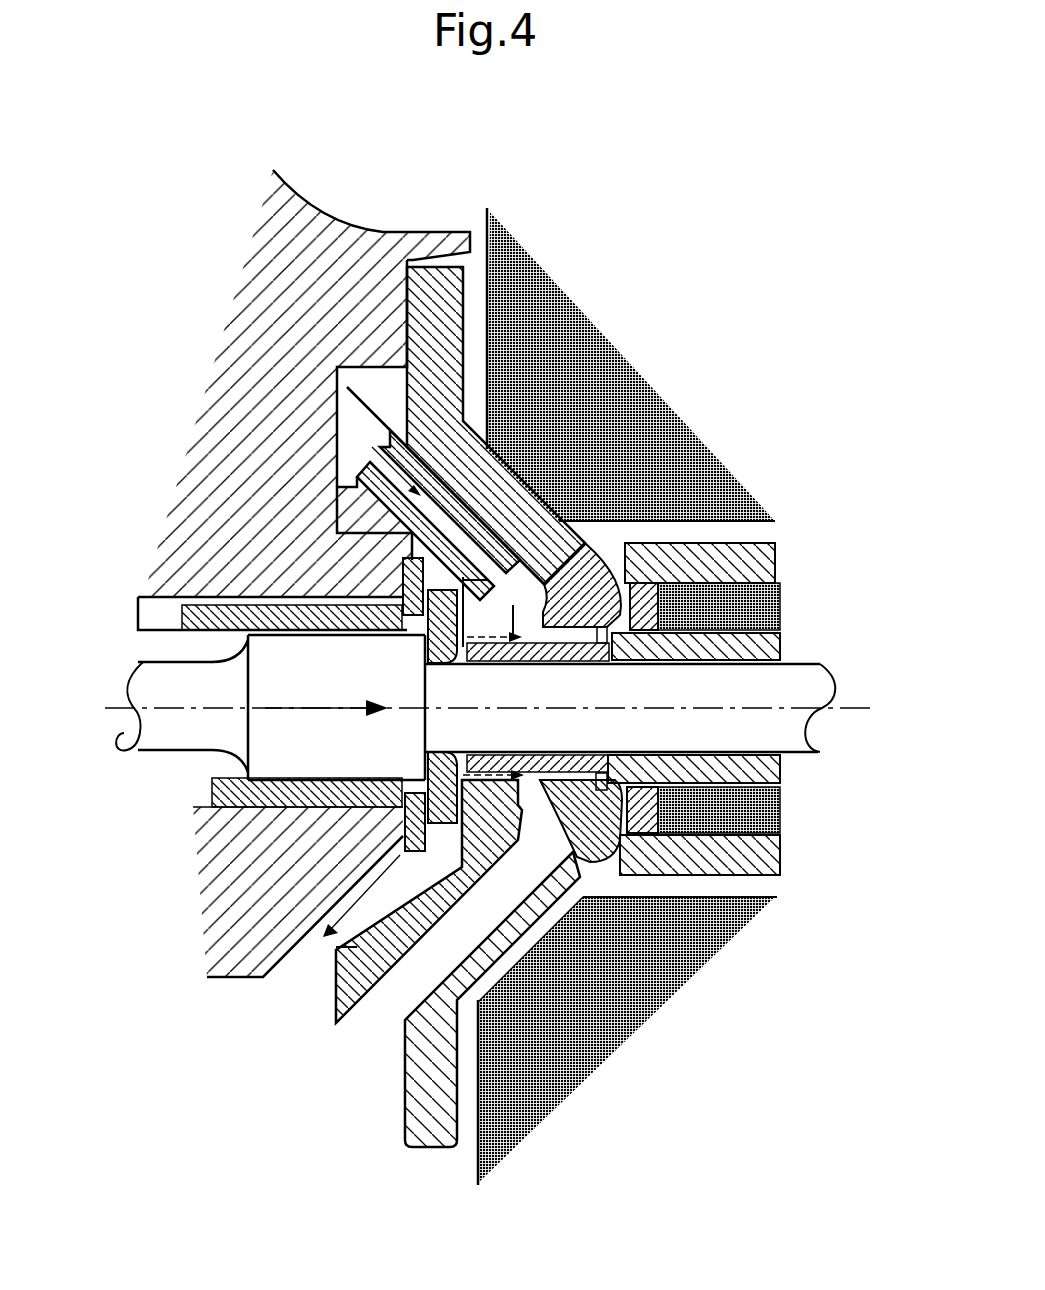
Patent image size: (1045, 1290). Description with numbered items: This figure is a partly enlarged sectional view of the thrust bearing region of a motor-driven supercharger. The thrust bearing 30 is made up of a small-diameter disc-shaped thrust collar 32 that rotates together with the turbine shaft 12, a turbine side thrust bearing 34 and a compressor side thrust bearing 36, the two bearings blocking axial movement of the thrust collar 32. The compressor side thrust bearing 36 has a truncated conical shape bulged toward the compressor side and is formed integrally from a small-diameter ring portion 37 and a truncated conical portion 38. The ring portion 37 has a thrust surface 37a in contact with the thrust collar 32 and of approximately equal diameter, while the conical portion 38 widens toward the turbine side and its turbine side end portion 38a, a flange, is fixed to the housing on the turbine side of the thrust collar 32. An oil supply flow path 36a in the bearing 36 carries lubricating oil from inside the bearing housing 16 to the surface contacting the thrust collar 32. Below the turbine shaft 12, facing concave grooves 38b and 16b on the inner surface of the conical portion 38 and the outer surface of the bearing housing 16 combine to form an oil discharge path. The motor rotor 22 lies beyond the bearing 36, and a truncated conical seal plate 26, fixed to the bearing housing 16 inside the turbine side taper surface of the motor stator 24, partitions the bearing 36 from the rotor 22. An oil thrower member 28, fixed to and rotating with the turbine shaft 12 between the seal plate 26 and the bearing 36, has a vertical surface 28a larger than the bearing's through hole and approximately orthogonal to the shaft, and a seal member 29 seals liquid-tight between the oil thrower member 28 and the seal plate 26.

The turbine shaft 12 is at (175, 737).
The bearing housing 16 is at (237, 398).
The concave groove 16b is at (273, 950).
The motor rotor 22 is at (718, 890).
The motor stator 24 is at (617, 407).
The seal plate 26 is at (420, 1083).
The oil thrower member 28 is at (565, 805).
The vertical surface 28a is at (522, 772).
The seal member 29 is at (630, 877).
The thrust bearing 30 is at (338, 550).
The thrust collar 32 is at (450, 665).
The turbine side thrust bearing 34 is at (403, 828).
The compressor side thrust bearing 36 is at (502, 528).
The oil supply flow path 36a is at (437, 507).
The small-diameter ring portion 37 is at (592, 548).
The thrust surface 37a is at (425, 637).
The truncated conical portion 38 is at (455, 520).
The turbine side end portion 38a is at (330, 368).
The concave groove 38b is at (357, 947).